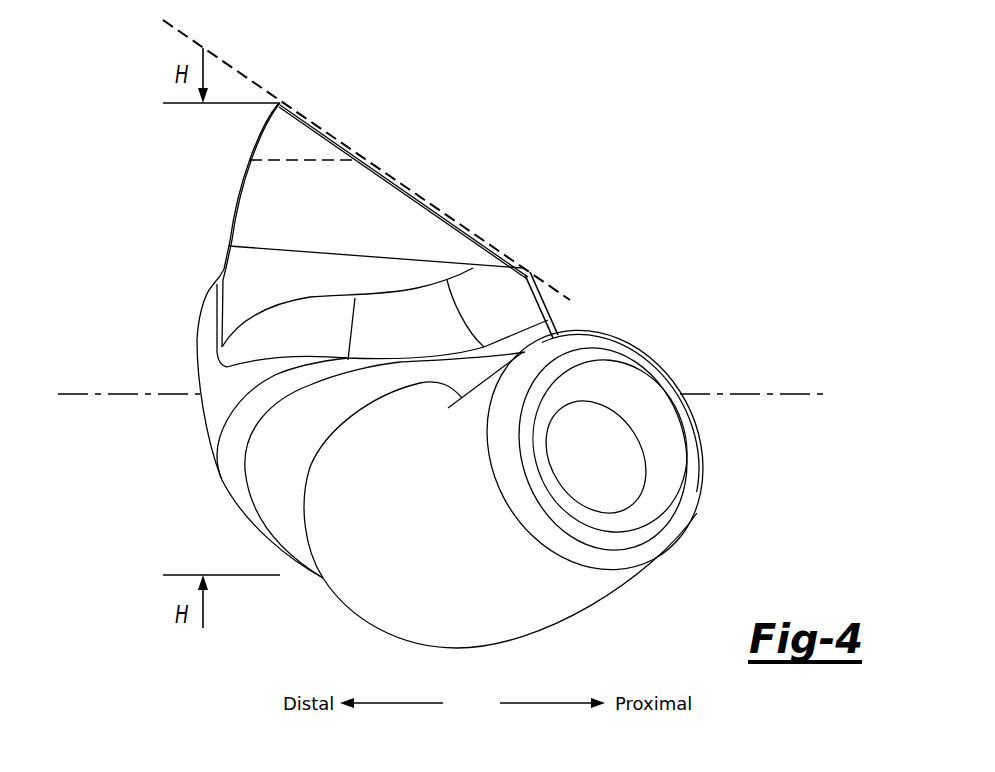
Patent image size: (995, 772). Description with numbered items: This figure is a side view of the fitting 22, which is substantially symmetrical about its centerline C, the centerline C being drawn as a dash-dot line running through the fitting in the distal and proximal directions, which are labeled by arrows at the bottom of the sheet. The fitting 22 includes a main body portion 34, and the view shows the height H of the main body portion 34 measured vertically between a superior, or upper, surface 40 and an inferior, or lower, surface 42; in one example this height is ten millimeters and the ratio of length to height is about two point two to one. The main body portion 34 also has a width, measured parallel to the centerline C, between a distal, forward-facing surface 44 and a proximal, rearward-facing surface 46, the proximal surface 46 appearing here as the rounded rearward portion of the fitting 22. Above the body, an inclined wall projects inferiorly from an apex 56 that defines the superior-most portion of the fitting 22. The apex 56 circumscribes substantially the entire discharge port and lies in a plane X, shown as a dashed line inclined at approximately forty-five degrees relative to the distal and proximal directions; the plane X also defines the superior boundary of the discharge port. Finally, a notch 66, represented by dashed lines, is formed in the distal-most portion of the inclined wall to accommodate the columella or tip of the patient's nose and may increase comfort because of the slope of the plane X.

The fitting 22 is at (124, 558).
The main body portion 34 is at (205, 441).
The superior surface 40 is at (377, 168).
The inferior surface 42 is at (296, 577).
The distal surface 44 is at (216, 492).
The proximal surface 46 is at (556, 333).
The apex 56 is at (318, 127).
The notch 66 is at (284, 160).
The plane X is at (553, 287).
The centerline C is at (768, 394).